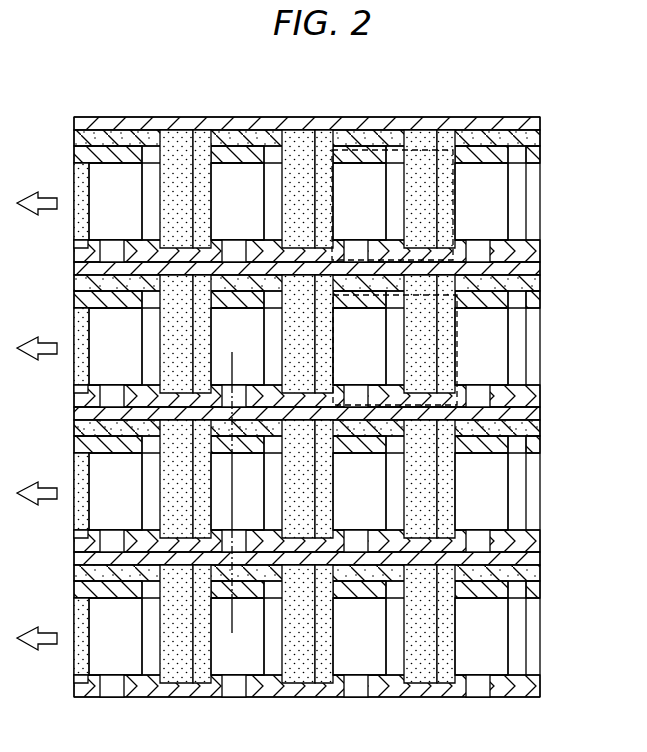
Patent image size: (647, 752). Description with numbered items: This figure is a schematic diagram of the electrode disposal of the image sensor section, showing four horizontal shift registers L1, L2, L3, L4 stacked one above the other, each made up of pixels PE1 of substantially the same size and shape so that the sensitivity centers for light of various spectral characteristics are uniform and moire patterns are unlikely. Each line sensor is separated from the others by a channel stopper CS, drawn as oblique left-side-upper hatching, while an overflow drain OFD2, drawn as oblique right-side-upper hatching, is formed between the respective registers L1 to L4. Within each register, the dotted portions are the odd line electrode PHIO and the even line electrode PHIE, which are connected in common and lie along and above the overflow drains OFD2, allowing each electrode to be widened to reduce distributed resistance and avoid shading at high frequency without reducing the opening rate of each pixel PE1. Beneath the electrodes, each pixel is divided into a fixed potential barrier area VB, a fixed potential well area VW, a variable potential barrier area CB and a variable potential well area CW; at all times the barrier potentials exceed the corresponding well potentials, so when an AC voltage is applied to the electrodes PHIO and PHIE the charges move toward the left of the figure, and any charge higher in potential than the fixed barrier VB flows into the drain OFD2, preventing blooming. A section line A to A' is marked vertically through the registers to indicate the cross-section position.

The overflow drain OFD2 is at (544, 581).
The channel stopper CS is at (544, 697).
The variable potential well area CW is at (178, 174).
The variable potential barrier area CB is at (204, 174).
The fixed potential well area VW is at (298, 419).
The fixed potential barrier area VB is at (150, 174).
The pixel PE1 is at (416, 150).
The horizontal shift register L1 is at (529, 163).
The horizontal shift register L2 is at (529, 308).
The horizontal shift register L3 is at (529, 453).
The horizontal shift register L4 is at (529, 598).
The odd line electrode PHIO is at (82, 183).
The even line electrode PHIE is at (82, 328).
The section line A is at (246, 487).
The section line A' is at (247, 630).